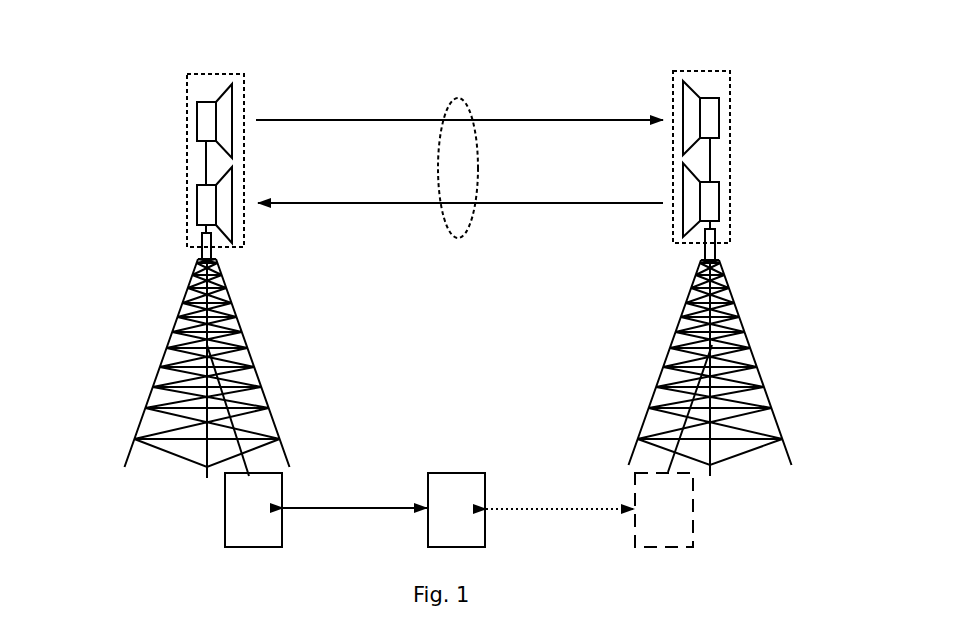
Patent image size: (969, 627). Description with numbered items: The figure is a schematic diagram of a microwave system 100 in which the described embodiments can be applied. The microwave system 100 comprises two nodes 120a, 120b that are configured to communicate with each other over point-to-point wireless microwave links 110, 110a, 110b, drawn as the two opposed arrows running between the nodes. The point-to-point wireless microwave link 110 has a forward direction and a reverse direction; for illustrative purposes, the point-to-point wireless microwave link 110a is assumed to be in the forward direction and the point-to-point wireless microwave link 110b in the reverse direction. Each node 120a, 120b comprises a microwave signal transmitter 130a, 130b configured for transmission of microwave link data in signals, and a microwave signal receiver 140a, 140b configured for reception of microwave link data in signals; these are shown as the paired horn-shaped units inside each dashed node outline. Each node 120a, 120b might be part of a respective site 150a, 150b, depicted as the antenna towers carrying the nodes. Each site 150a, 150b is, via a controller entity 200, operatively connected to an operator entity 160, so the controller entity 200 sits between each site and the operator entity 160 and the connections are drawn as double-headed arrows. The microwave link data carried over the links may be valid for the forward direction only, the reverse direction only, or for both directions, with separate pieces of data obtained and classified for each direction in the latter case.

The microwave system 100 is at (138, 66).
The point-to-point wireless microwave link 110 is at (462, 96).
The point-to-point wireless microwave link 110a is at (560, 118).
The point-to-point wireless microwave link 110b is at (545, 206).
The node 120a is at (186, 156).
The node 120b is at (731, 150).
The microwave signal transmitter 130a is at (196, 118).
The microwave signal transmitter 130b is at (720, 192).
The microwave signal receiver 140a is at (196, 198).
The microwave signal receiver 140b is at (720, 112).
The site 150a is at (178, 312).
The site 150b is at (745, 311).
The operator entity 160 is at (452, 472).
The controller entity 200 is at (224, 532).